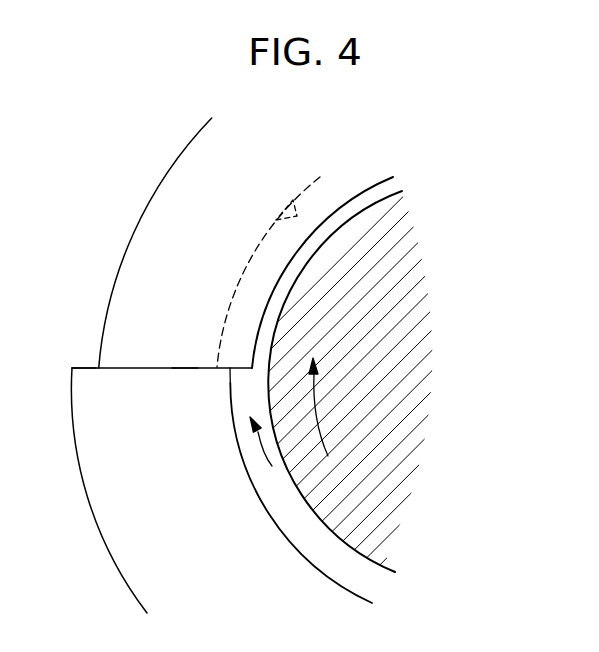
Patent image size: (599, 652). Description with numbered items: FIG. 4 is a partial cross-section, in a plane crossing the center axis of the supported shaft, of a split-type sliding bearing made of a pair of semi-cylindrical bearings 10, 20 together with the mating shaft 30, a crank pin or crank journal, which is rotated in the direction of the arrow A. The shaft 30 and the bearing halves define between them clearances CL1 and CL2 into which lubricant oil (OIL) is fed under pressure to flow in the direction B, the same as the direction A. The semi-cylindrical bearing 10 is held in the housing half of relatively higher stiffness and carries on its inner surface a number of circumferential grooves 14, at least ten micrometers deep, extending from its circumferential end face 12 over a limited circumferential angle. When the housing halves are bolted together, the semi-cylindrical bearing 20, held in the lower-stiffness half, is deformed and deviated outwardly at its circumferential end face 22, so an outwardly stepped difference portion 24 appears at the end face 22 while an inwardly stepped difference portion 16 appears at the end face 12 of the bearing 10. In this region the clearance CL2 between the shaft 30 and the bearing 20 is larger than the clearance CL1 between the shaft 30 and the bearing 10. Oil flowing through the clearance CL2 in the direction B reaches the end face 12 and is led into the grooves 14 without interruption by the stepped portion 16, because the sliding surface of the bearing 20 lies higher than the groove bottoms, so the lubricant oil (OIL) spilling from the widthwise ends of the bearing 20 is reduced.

The semi-cylindrical bearing 10 is at (167, 218).
The circumferential grooves 14 is at (276, 220).
The circumferential end face 12 is at (138, 370).
The outwardly stepped difference portion 24 is at (83, 367).
The circumferential end face 22 is at (184, 367).
The inwardly stepped difference portion 16 is at (240, 370).
The semi-cylindrical bearing 20 is at (120, 492).
The mating shaft 30 is at (390, 447).
The clearance CL1 is at (393, 183).
The clearance CL2 is at (236, 418).
The shaft rotation direction A is at (318, 396).
The lubricant oil flow direction B is at (270, 456).
The lubricant oil OIL is at (288, 500).